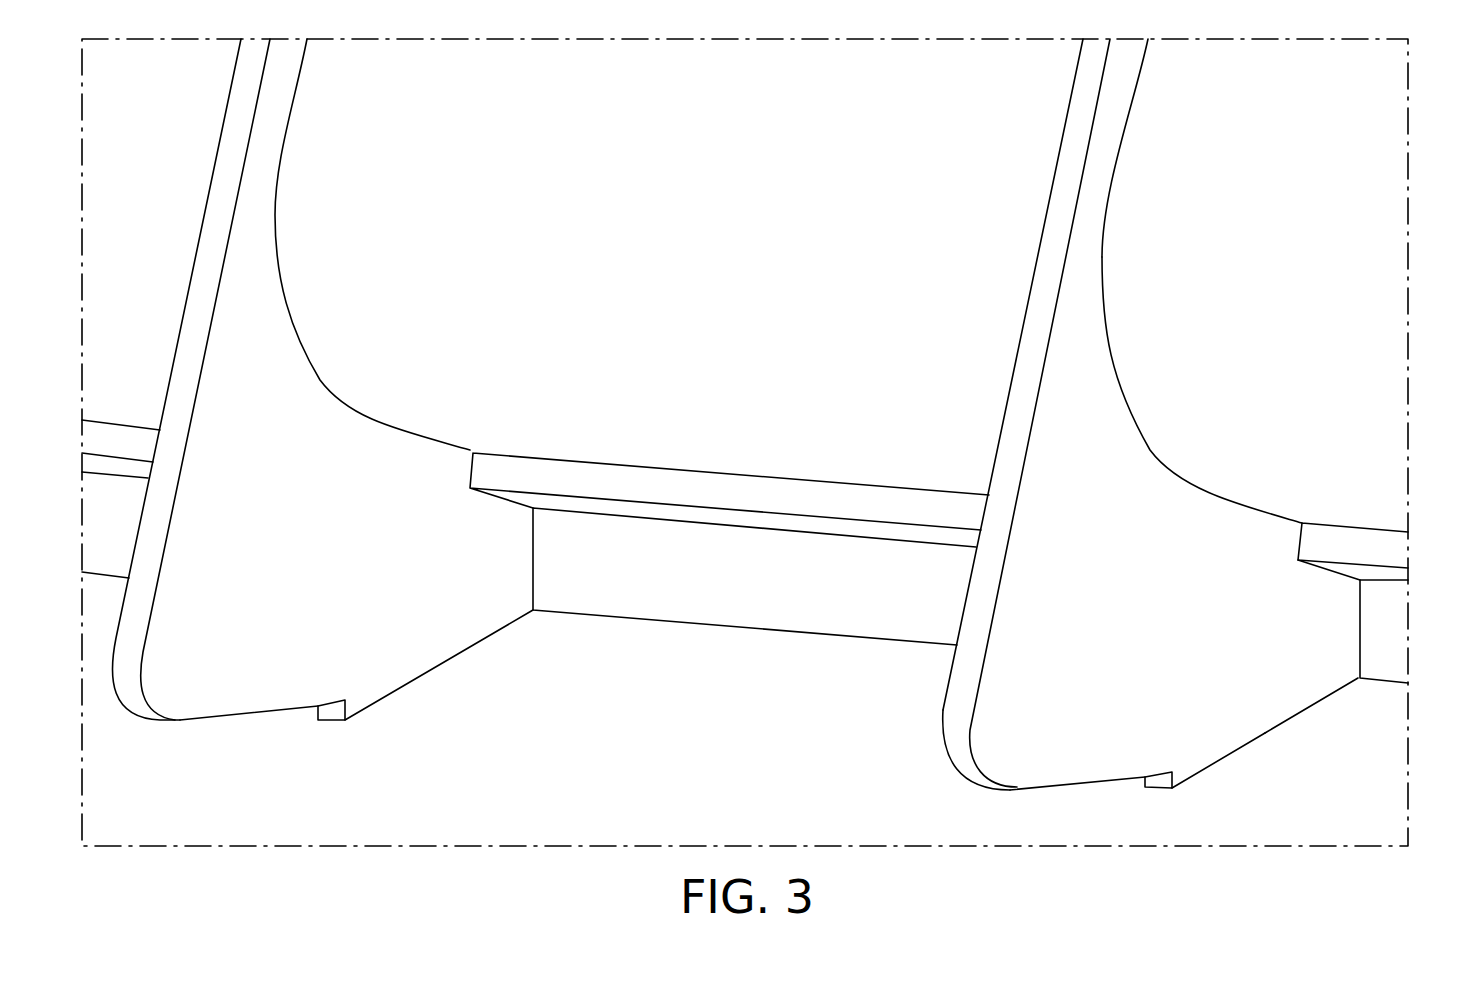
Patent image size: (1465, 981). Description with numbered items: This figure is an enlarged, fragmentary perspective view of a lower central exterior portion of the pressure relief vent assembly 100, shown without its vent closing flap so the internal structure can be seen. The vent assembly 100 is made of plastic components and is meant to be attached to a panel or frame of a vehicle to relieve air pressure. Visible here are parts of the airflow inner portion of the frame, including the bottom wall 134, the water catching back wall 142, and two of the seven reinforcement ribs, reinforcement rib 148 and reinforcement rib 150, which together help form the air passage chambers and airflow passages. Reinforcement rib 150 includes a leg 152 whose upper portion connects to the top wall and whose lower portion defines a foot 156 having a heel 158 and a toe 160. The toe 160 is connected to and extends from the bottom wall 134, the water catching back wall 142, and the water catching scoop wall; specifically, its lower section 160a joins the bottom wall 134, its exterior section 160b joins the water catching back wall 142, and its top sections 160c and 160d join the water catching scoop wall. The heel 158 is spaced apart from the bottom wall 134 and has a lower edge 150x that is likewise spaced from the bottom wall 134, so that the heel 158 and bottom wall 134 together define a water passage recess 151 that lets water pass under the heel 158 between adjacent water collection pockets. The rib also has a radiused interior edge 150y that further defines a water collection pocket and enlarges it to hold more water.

The pressure relief vent assembly 100 is at (248, 873).
The bottom wall 134 is at (563, 767).
The water catching back wall 142 is at (752, 628).
The reinforcement rib 148 is at (277, 188).
The reinforcement rib 150 is at (1130, 137).
The lower edge 150x is at (1068, 787).
The curved interior edge 150y is at (1130, 420).
The water passage recess 151 is at (1115, 790).
The leg 152 is at (1050, 183).
The foot 156 is at (1235, 755).
The heel 158 is at (1008, 793).
The toe 160 is at (1319, 614).
The lower section 160a is at (1275, 722).
The exterior section 160b is at (1357, 627).
The top section 160c is at (1328, 573).
The top section 160d is at (1298, 540).